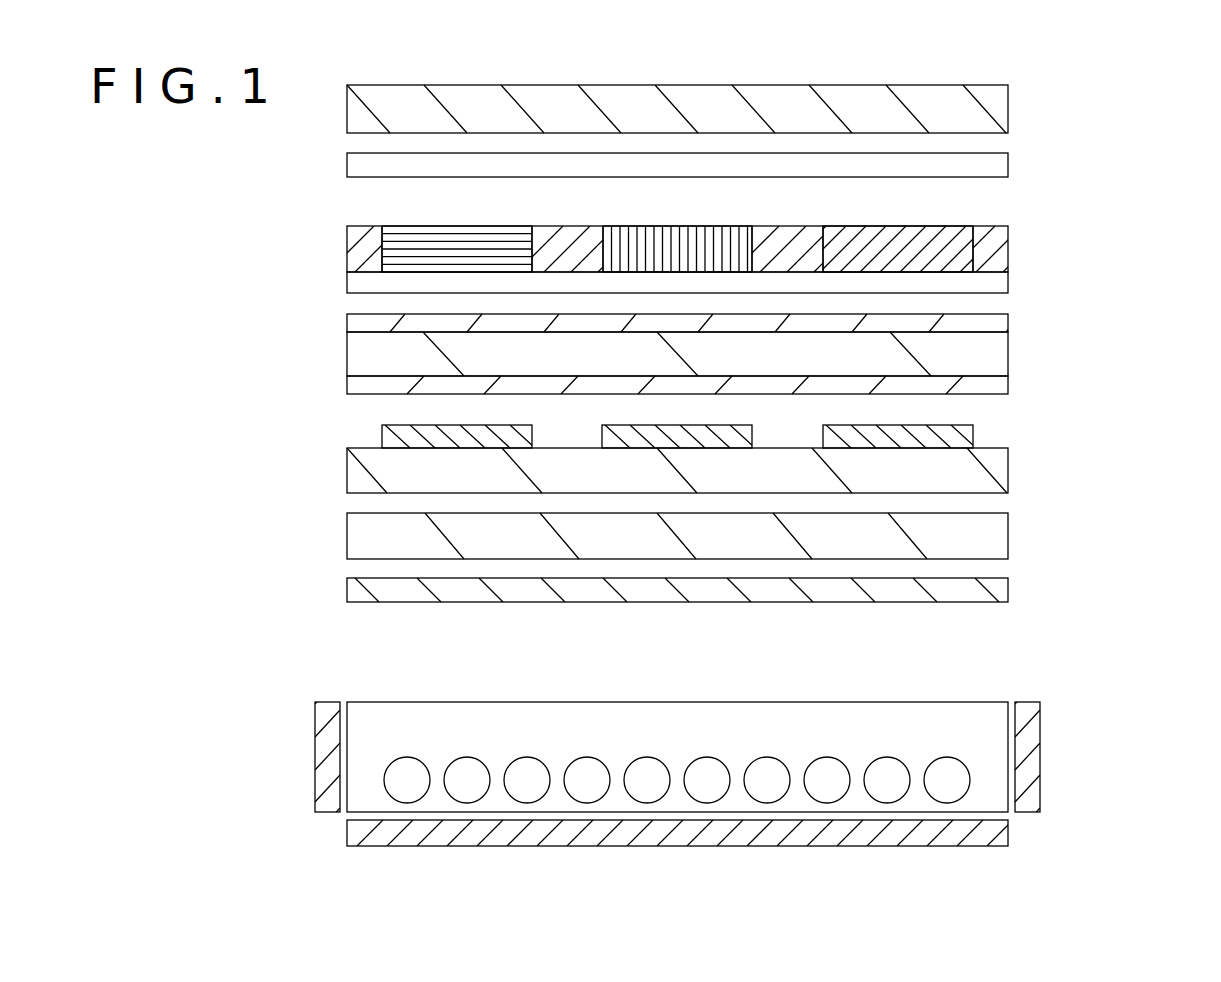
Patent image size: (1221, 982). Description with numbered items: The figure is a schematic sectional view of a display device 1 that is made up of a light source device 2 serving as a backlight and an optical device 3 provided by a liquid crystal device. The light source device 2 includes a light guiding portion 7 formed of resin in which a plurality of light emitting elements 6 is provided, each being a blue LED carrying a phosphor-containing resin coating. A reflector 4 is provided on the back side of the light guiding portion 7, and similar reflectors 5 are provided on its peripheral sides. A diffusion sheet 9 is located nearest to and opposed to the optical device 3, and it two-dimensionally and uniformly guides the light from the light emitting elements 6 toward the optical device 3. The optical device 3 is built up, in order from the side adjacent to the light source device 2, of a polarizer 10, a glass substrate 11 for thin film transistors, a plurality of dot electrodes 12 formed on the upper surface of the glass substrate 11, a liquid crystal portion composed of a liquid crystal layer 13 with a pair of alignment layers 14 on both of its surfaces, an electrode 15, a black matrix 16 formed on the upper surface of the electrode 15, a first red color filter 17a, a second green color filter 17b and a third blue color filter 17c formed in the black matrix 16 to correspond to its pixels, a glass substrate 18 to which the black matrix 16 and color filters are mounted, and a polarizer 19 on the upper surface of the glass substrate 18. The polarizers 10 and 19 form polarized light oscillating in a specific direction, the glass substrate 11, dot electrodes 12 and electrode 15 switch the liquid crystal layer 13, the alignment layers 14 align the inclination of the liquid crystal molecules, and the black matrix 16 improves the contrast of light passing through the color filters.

The display device 1 is at (1216, 89).
The light source device 2 is at (1100, 582).
The optical device 3 is at (1100, 87).
The reflector 4 is at (1008, 833).
The reflectors 5 is at (313, 752).
The light emitting elements 6 is at (950, 781).
The light guiding portion 7 is at (988, 723).
The diffusion sheet 9 is at (1008, 591).
The polarizer 10 is at (1008, 538).
The glass substrate for TFTs 11 is at (1008, 470).
The dot electrodes 12 is at (973, 438).
The liquid crystal layer 13 is at (1008, 356).
The alignment layers 14 is at (1008, 323).
The electrode 15 is at (1008, 283).
The black matrix 16 is at (687, 231).
The first (red) color filter 17a is at (415, 225).
The second (green) color filter 17b is at (633, 225).
The third (blue) color filter 17c is at (862, 225).
The glass substrate 18 is at (1008, 165).
The polarizer 19 is at (1008, 111).